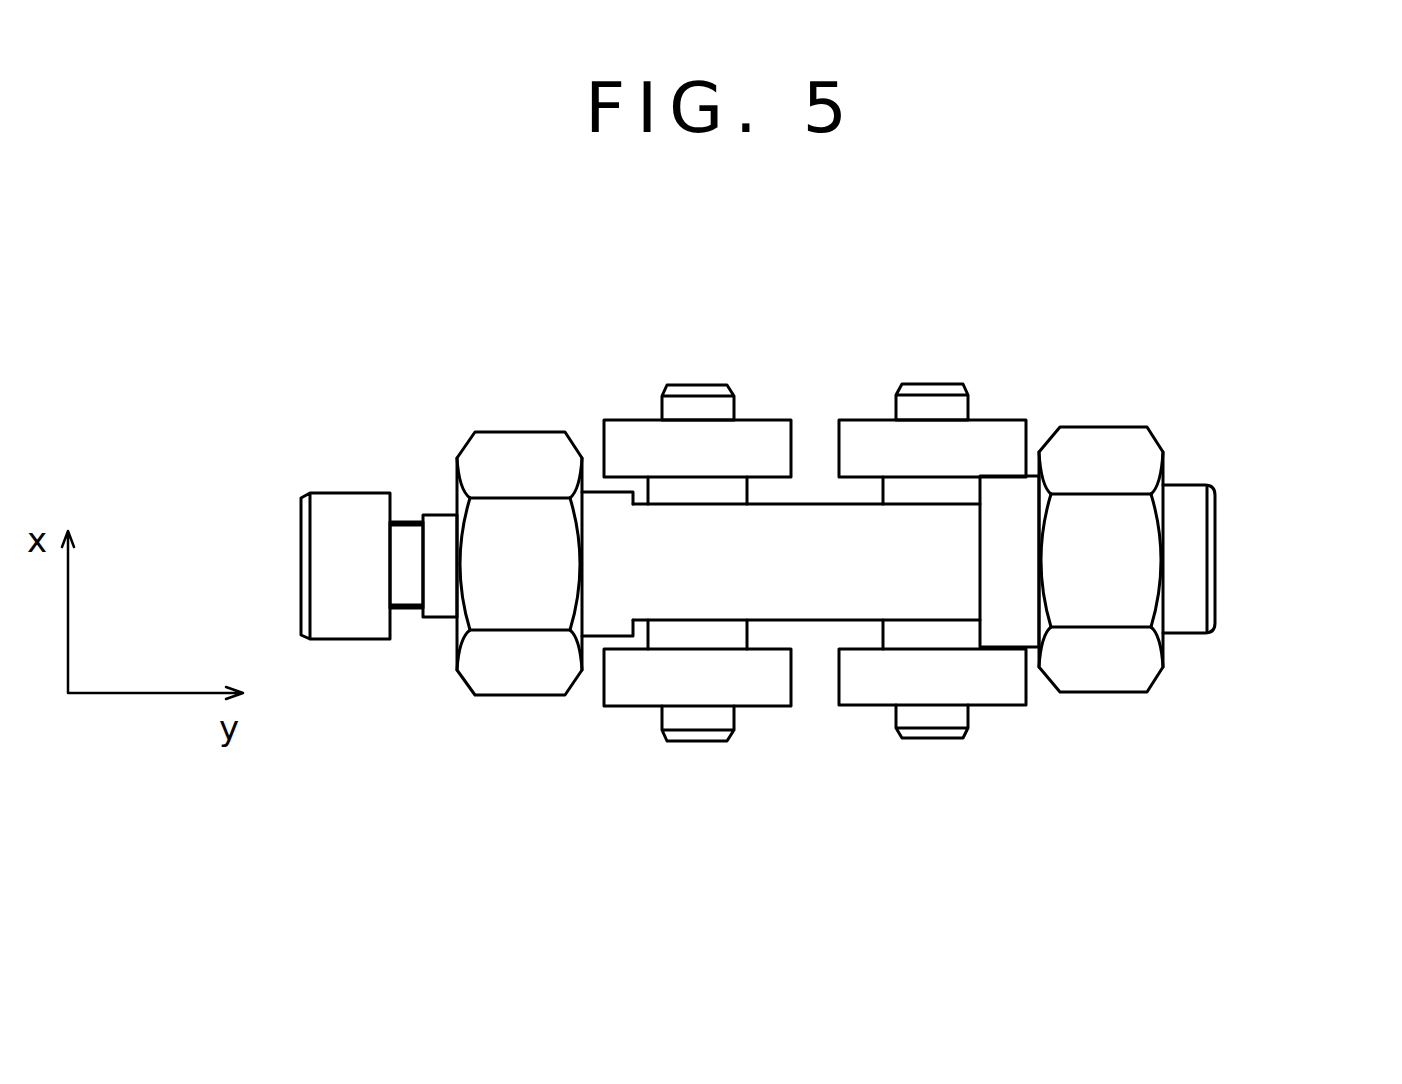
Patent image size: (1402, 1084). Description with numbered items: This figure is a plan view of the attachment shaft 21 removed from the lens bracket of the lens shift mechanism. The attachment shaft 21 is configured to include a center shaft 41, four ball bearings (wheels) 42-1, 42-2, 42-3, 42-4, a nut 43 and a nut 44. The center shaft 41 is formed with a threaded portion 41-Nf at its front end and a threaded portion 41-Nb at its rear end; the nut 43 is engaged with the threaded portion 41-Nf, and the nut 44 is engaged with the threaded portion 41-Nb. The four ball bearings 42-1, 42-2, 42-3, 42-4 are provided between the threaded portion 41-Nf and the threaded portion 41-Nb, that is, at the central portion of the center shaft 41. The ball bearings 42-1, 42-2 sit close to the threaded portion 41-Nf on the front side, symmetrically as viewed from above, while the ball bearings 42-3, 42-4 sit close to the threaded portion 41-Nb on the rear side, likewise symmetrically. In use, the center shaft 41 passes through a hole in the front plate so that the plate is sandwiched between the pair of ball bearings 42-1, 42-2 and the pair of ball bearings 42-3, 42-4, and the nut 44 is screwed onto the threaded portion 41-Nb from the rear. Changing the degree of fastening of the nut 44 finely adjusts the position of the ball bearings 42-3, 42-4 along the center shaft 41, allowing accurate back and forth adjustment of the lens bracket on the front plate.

The attachment shaft 21 is at (781, 815).
The center shaft 41 is at (820, 516).
The threaded portion 41-Nf is at (595, 505).
The threaded portion 41-Nb is at (1187, 560).
The ball bearing 42-1 is at (637, 678).
The ball bearing 42-2 is at (763, 433).
The ball bearing 42-3 is at (872, 675).
The ball bearing 42-4 is at (998, 433).
The nut 43 is at (520, 668).
The nut 44 is at (1103, 665).